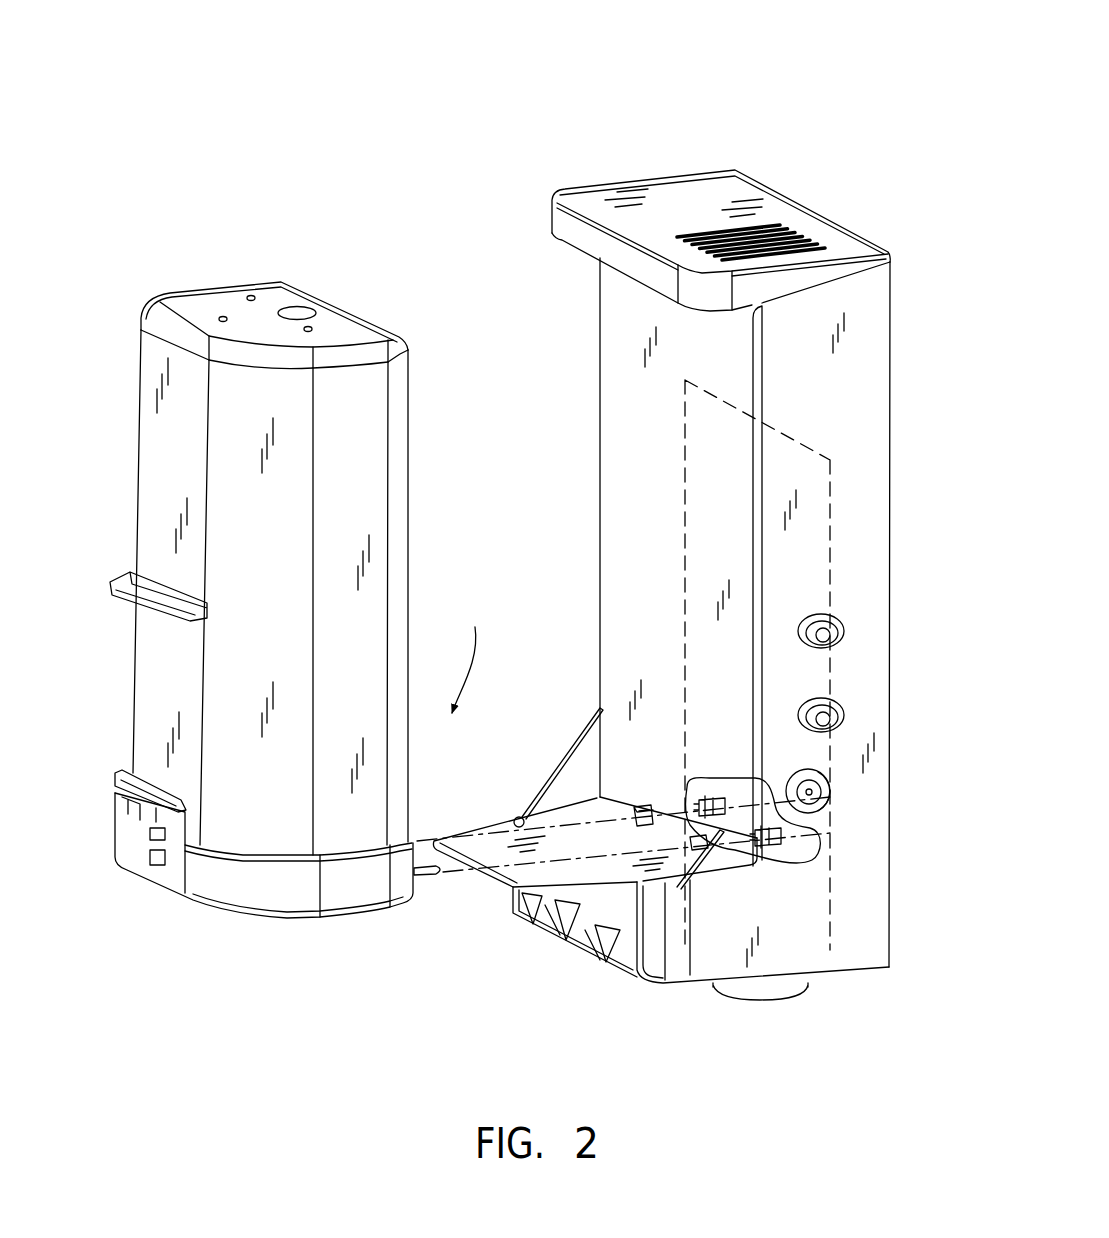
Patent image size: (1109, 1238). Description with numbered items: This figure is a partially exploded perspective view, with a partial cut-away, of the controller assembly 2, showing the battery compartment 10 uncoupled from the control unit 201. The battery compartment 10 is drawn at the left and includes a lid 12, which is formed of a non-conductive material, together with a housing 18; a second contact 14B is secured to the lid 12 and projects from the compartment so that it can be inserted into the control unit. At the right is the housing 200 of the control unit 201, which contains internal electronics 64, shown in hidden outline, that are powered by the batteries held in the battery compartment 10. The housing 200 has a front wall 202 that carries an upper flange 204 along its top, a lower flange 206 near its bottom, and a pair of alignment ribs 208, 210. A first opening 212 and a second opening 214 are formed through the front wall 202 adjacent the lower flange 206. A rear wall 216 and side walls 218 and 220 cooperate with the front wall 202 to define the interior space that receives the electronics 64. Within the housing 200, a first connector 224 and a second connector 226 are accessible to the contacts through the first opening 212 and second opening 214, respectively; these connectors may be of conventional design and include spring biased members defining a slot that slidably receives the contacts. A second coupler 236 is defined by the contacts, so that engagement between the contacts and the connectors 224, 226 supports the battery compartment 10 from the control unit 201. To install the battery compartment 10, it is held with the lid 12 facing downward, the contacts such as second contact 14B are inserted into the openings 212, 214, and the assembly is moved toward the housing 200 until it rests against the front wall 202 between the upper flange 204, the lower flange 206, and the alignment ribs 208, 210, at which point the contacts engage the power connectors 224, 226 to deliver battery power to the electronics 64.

The controller assembly 2 is at (846, 112).
The battery compartment 10 is at (177, 243).
The lid 12 is at (197, 922).
The second contact 14B is at (427, 893).
The housing 18 is at (125, 388).
The internal electronics 64 is at (683, 562).
The housing 200 is at (870, 853).
The control unit 201 is at (706, 152).
The front wall 202 is at (633, 447).
The upper flange 204 is at (577, 262).
The lower flange 206 is at (580, 867).
The alignment rib 208 is at (727, 863).
The alignment rib 210 is at (577, 775).
The first opening 212 is at (648, 807).
The second opening 214 is at (663, 883).
The rear wall 216 is at (893, 313).
The side wall 218 is at (598, 365).
The side wall 220 is at (862, 523).
The first connector 224 is at (703, 793).
The second connector 226 is at (787, 833).
The second coupler 236 is at (472, 655).